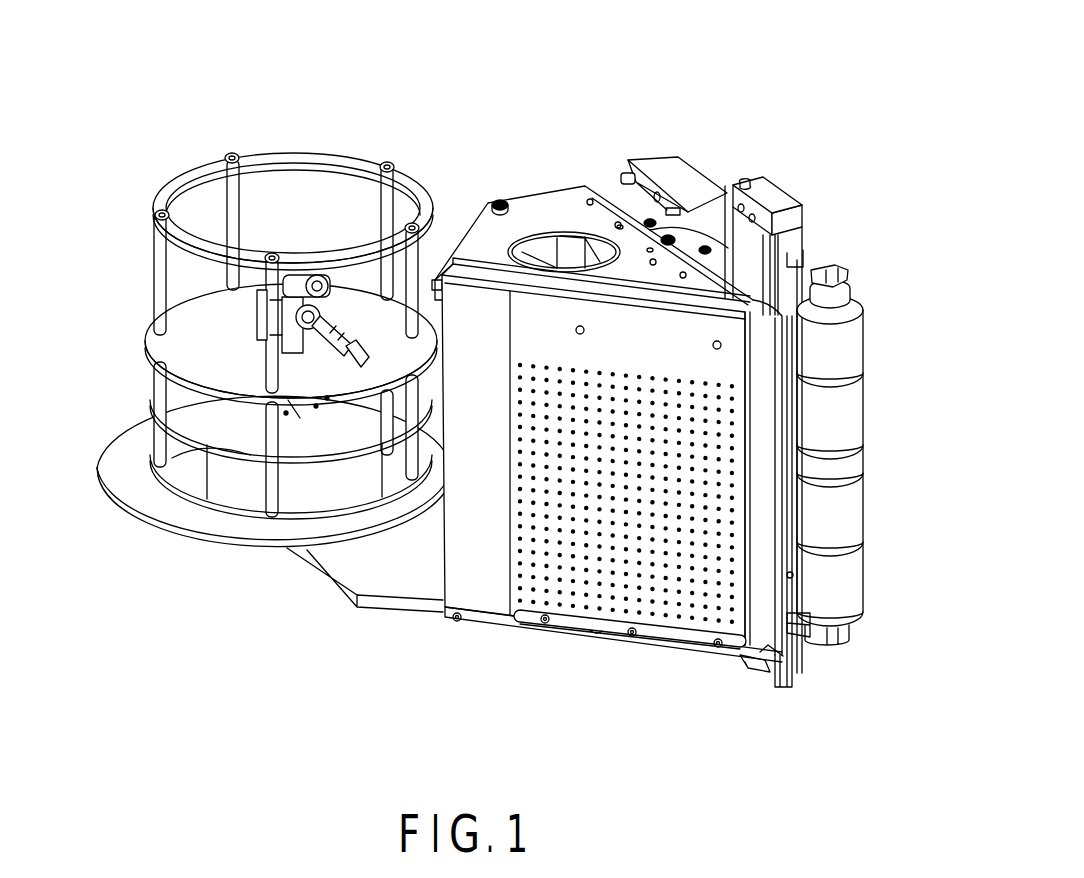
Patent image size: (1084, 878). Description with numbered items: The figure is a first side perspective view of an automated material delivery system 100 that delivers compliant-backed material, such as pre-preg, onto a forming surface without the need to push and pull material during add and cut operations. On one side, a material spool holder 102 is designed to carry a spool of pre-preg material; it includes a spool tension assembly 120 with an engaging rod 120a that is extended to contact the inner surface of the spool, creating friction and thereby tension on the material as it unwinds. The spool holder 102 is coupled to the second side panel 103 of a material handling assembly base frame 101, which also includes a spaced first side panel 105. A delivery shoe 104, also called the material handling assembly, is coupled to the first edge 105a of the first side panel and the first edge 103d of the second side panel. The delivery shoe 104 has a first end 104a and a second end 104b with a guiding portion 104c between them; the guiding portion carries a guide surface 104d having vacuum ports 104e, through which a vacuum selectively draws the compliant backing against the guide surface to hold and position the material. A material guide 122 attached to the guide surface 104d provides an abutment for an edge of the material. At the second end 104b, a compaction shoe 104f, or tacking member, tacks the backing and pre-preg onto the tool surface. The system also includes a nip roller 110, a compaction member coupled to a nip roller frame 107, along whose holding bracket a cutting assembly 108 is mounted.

The material delivery system 100 is at (561, 88).
The material handling assembly base frame 101 is at (561, 178).
The material spool holder 102 is at (192, 357).
The second side panel 103 is at (357, 565).
The first edge of the second side panel 103d is at (363, 610).
The delivery shoe 104 is at (687, 350).
The first end 104a is at (442, 580).
The second end 104b is at (806, 652).
The guiding portion 104c is at (540, 553).
The guide surface 104d is at (567, 568).
The vacuum ports 104e is at (638, 598).
The compaction shoe 104f is at (763, 637).
The first side panel 105 is at (533, 220).
The first edge of the first side panel 105a is at (434, 290).
The nip roller frame 107 is at (715, 168).
The cutting assembly 108 is at (767, 193).
The nip roller 110 is at (867, 393).
The spool tension assembly 120 is at (258, 292).
The engaging rod 120a is at (338, 313).
The material guide 122 is at (667, 637).